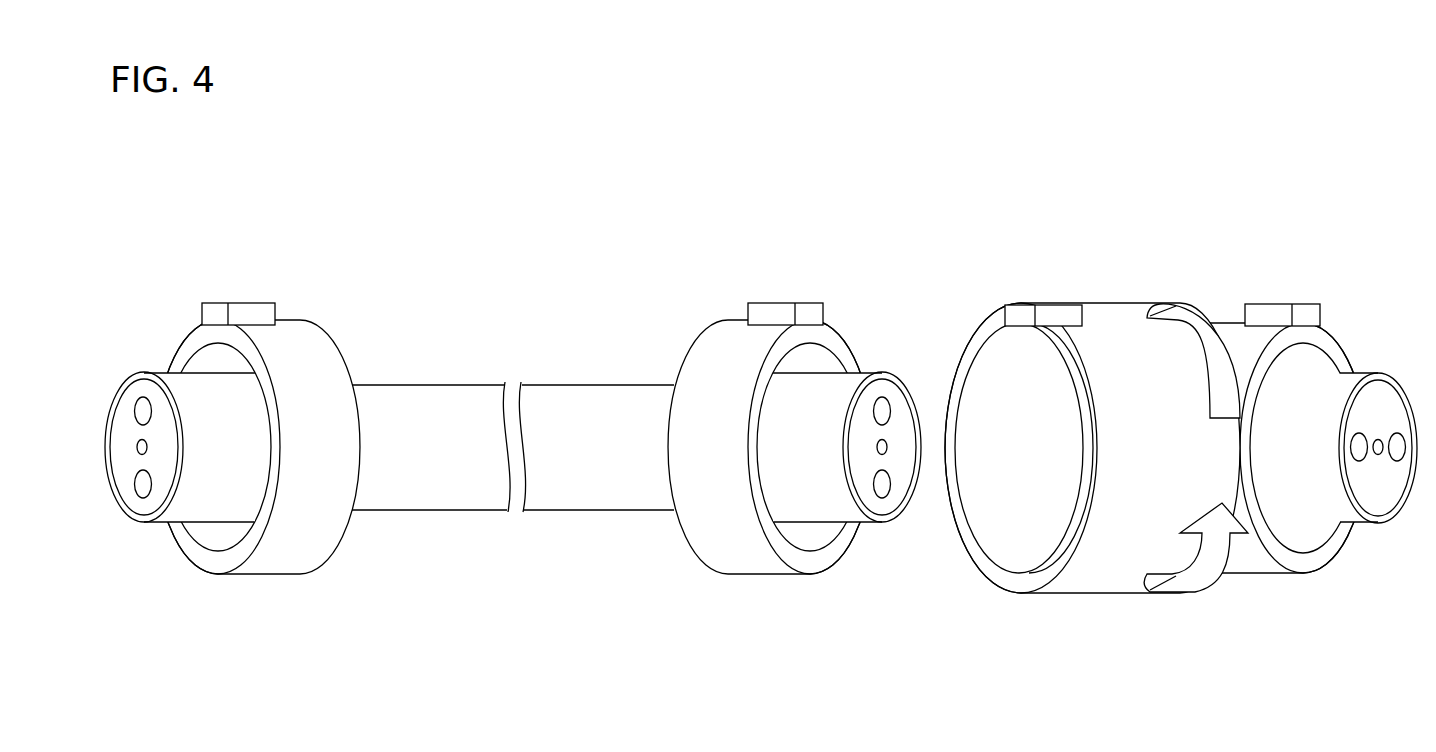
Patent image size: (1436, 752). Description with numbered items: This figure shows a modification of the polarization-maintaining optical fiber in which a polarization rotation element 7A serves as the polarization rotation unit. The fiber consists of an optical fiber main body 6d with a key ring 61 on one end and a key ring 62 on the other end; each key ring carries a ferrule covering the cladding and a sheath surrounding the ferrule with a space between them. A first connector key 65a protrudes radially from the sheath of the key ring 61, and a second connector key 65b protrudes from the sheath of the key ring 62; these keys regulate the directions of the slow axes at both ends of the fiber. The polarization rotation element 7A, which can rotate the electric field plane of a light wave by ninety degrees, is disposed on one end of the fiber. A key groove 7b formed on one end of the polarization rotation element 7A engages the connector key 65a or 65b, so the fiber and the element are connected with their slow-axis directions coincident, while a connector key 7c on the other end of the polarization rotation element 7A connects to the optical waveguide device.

The optical fiber main body 6d is at (410, 470).
The key ring 61 is at (244, 451).
The key ring 62 is at (782, 452).
The first connector key 65a is at (244, 303).
The second connector key 65b is at (780, 303).
The polarization rotation element 7A is at (1181, 392).
The key groove 7b is at (1022, 314).
The connector key 7c is at (1282, 277).